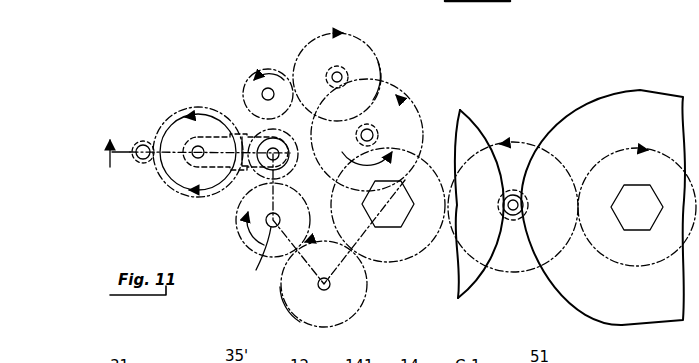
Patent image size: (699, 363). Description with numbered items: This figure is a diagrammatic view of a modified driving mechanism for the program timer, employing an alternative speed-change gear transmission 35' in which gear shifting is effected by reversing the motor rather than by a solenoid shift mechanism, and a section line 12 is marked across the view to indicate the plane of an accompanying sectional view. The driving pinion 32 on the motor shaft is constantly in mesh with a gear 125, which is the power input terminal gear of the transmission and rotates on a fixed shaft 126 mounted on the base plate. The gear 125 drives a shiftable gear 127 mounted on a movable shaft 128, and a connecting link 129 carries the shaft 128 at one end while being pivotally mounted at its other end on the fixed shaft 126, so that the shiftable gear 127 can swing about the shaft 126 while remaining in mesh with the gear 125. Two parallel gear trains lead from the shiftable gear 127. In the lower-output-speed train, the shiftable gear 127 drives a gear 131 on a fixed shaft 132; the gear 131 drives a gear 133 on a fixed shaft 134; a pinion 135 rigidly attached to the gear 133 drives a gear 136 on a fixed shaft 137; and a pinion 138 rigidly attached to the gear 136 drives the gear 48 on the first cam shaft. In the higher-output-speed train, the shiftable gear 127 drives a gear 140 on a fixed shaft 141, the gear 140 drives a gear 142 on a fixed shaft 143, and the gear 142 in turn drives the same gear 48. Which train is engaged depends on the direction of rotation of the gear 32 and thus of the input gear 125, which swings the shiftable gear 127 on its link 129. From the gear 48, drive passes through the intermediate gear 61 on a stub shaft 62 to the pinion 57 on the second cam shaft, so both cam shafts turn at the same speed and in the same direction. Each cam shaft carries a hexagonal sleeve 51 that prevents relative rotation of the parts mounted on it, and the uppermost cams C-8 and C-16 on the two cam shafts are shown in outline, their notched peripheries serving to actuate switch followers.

The section line 12- 12 is at (401, 181).
The driving pinion 32 is at (138, 142).
The power input terminal gear 125 is at (157, 170).
The fixed shaft 126 is at (194, 150).
The shiftable gear 127 is at (292, 168).
The movable shaft 128 is at (268, 157).
The connecting link 129 is at (186, 174).
The gear 131 is at (244, 78).
The fixed shaft 132 is at (262, 94).
The gear 133 is at (363, 35).
The fixed shaft 134 is at (330, 74).
The pinion 135 is at (380, 57).
The gear 136 is at (437, 116).
The fixed shaft 137 is at (345, 143).
The pinion 138 is at (378, 135).
The gear 140 is at (240, 235).
The fixed shaft 141 is at (256, 257).
The gear 142 is at (280, 287).
The fixed shaft 143 is at (318, 290).
The pinion 48 is at (378, 262).
The sleeve 51 is at (395, 222).
The pinion 57 is at (619, 264).
The intermediate gear 61 is at (515, 139).
The stub shaft 62 is at (519, 212).
The speed-change gear transmission 35' is at (453, 74).
The cam C-8 is at (478, 123).
The cam C-16 is at (640, 90).